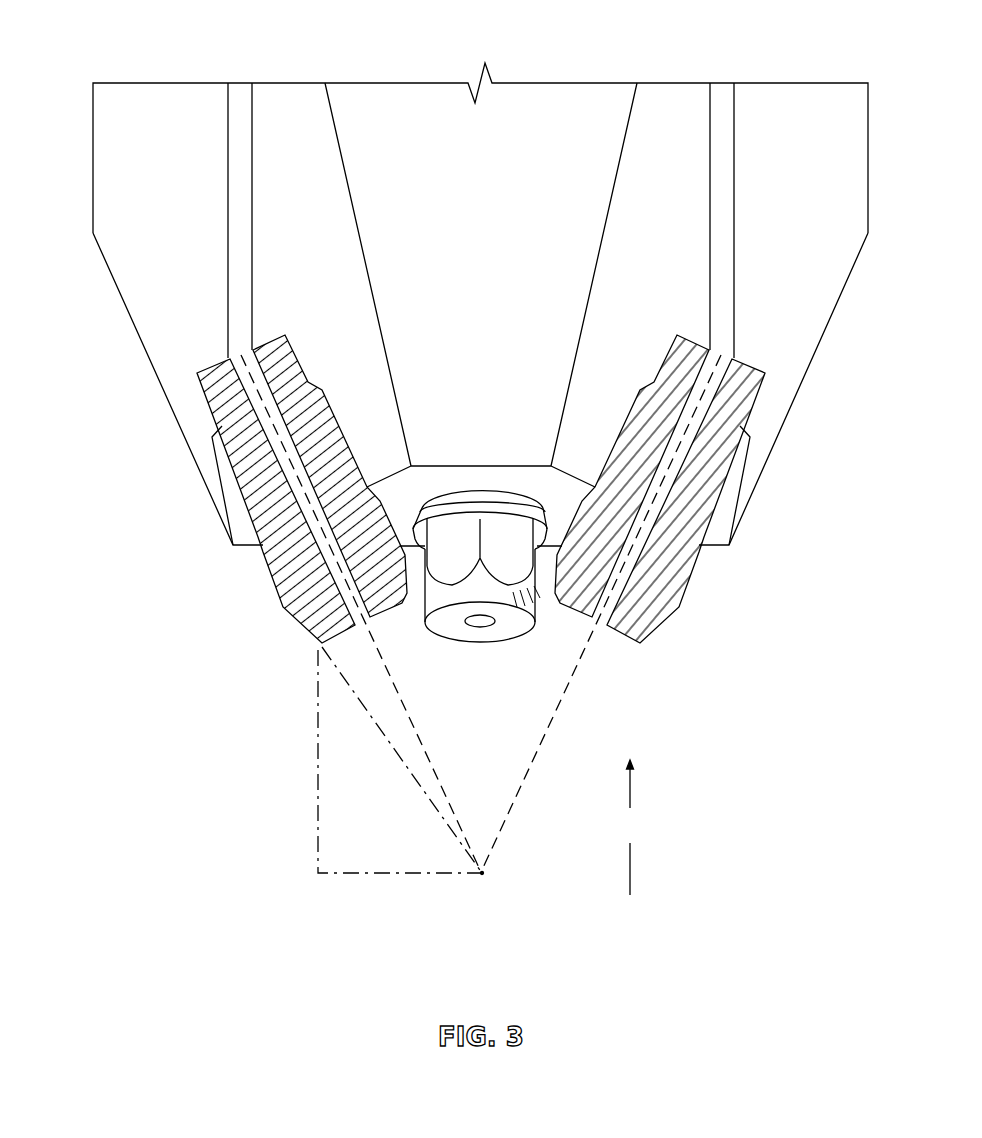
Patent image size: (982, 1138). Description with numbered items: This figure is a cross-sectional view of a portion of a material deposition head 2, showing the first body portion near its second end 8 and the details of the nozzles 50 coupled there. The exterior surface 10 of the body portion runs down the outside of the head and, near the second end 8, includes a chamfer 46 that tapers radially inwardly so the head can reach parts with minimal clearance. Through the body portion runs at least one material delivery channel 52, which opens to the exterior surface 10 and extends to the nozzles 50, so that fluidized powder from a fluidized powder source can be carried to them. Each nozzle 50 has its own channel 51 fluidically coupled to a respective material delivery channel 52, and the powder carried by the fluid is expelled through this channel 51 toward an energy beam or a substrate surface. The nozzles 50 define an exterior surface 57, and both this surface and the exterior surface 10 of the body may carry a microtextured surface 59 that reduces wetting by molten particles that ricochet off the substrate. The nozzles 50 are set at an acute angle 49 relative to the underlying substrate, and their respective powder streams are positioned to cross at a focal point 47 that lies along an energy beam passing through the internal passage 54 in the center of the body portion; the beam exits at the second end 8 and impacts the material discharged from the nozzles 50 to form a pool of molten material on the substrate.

The material deposition head 2 is at (113, 55).
The second end 8 is at (777, 564).
The exterior surface 10 is at (93, 124).
The chamfer 46 is at (130, 317).
The focal point 47 is at (485, 872).
The acute angle 49 is at (447, 858).
The nozzle 50 is at (440, 594).
The channel 51 is at (645, 531).
The material delivery channel 52 is at (228, 213).
The internal passage 54 is at (386, 237).
The exterior surface 57 is at (287, 612).
The microtextured surface 59 is at (213, 506).